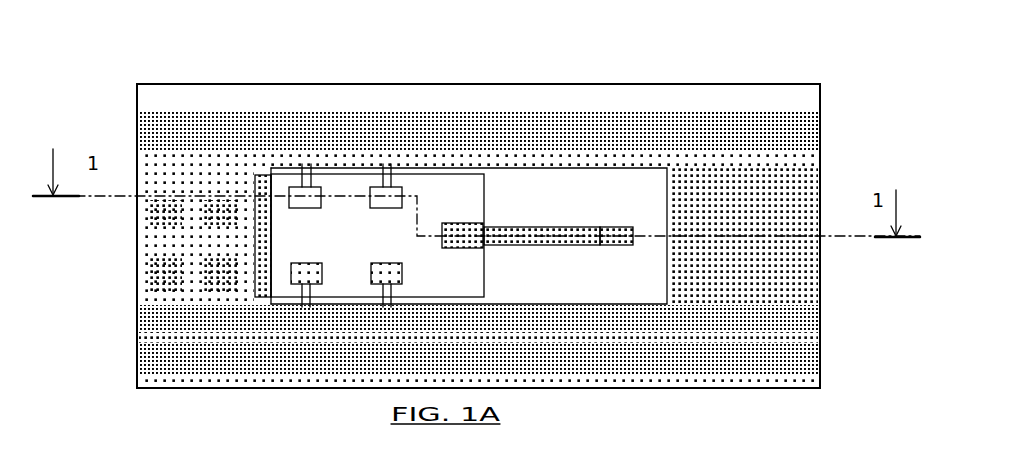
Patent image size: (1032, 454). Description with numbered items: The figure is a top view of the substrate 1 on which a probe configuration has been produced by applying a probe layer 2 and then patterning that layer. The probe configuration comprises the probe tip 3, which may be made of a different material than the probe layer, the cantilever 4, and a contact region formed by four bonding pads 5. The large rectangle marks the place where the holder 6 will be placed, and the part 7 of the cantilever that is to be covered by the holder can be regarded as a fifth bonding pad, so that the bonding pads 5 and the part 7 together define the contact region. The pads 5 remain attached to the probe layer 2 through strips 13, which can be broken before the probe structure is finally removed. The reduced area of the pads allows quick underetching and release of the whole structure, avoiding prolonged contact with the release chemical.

The substrate 1 is at (821, 361).
The probe layer 2 is at (753, 103).
The probe tip 3 is at (622, 238).
The cantilever 4 is at (547, 238).
The bonding pads 5 is at (382, 202).
The holder 6 is at (258, 172).
The part of the cantilever 7 is at (462, 232).
The strips 13 is at (309, 168).